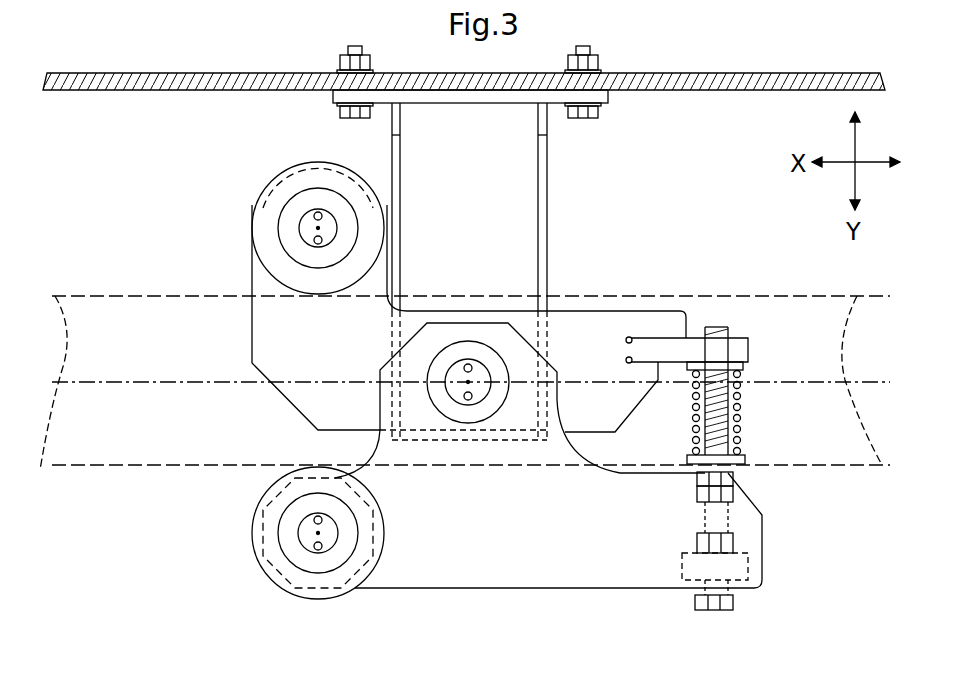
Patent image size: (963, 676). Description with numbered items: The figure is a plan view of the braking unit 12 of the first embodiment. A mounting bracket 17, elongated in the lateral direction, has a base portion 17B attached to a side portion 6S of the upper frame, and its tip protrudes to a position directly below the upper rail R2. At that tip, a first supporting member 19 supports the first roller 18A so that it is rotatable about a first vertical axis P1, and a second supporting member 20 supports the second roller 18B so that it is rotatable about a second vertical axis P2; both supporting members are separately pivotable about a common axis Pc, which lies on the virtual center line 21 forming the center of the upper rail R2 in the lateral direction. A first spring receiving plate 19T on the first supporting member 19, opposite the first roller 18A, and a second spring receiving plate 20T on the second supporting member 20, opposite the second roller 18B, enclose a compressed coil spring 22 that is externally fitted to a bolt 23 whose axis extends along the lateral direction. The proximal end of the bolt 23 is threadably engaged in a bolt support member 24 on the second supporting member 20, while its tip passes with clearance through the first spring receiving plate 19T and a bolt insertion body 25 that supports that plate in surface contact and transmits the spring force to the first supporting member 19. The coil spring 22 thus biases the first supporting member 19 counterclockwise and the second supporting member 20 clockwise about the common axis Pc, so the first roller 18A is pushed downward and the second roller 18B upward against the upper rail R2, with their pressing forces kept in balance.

The side portion 6S is at (717, 90).
The base portion 17B is at (593, 97).
The mounting bracket 17 is at (553, 152).
The virtual center line 21 is at (465, 349).
The upper rail R2 is at (117, 296).
The braking unit 12 is at (625, 282).
The first supporting member 19 is at (582, 346).
The first spring receiving plate 19T is at (745, 367).
The bolt insertion body 25 is at (735, 346).
The coil spring 22 is at (740, 406).
The bolt support member 24 is at (748, 568).
The bolt 23 is at (735, 601).
The second supporting member 20 is at (595, 552).
The second spring receiving plate 20T is at (745, 463).
The first roller 18A is at (277, 215).
The first vertical axis P1 is at (312, 227).
The common axis Pc is at (470, 366).
The second roller 18B is at (262, 533).
The second vertical axis P2 is at (312, 535).